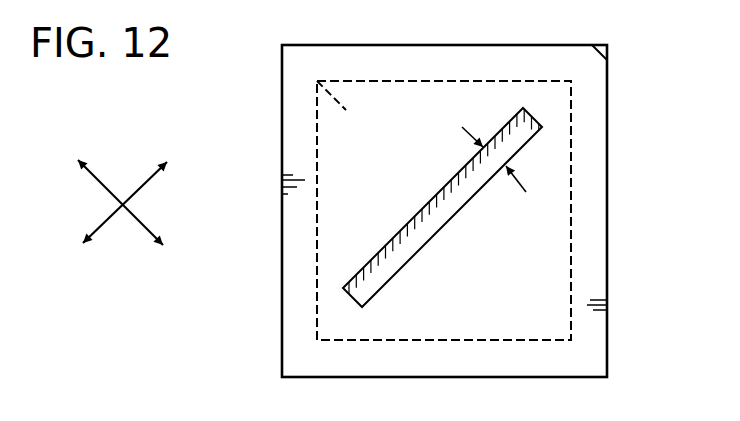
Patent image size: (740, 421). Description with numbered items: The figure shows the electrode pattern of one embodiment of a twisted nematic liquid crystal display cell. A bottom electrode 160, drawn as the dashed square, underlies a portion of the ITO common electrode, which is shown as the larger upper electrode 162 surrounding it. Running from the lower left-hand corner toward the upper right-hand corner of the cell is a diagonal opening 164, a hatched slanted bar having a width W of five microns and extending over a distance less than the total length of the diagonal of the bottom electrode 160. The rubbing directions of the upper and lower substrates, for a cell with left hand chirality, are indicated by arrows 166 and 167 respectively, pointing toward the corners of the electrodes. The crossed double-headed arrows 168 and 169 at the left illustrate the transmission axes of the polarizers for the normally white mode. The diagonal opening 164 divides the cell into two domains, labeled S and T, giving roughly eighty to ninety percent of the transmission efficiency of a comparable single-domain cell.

The bottom electrode 160 is at (571, 194).
The upper electrode 162 is at (607, 147).
The diagonal opening 164 is at (443, 226).
The arrow indicating rubbing direction for upper substrate 166 is at (575, 78).
The arrow indicating rubbing direction for lower substrate 167 is at (357, 121).
The arrow indicating polarizer transmission axis 168 is at (140, 220).
The arrow indicating polarizer transmission axis 169 is at (111, 221).